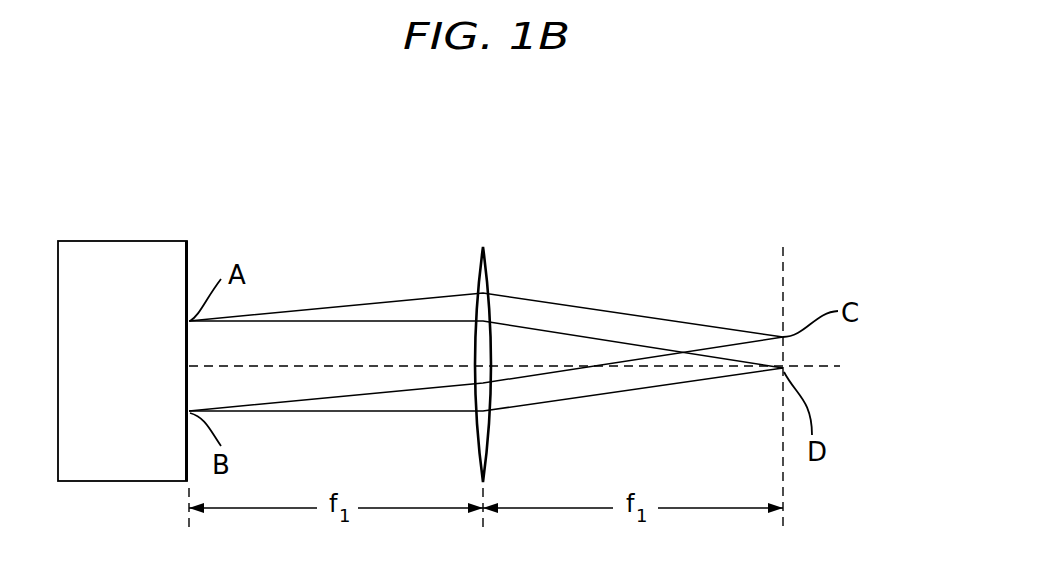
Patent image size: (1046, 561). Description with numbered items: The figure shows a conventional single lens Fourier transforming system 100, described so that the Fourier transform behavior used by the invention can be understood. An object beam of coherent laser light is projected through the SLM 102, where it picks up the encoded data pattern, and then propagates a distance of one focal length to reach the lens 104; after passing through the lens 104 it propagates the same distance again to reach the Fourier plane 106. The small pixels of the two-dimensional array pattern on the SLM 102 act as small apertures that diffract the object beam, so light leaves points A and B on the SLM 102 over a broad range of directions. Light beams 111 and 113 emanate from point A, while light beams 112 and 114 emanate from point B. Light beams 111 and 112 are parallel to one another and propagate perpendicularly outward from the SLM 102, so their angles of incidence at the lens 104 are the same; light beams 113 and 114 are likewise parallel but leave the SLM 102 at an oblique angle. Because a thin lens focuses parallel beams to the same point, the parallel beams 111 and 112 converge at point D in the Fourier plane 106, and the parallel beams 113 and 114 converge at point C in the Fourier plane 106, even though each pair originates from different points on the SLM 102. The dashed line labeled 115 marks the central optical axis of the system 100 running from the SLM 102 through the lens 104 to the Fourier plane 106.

The single lens Fourier transforming system 100 is at (638, 157).
The SLM 102 is at (117, 241).
The lens 104 is at (483, 247).
The Fourier plane 106 is at (783, 247).
The light beam 111 is at (300, 322).
The light beam 112 is at (366, 412).
The light beam 113 is at (357, 300).
The light beam 114 is at (258, 403).
The optical axis 115 is at (832, 366).